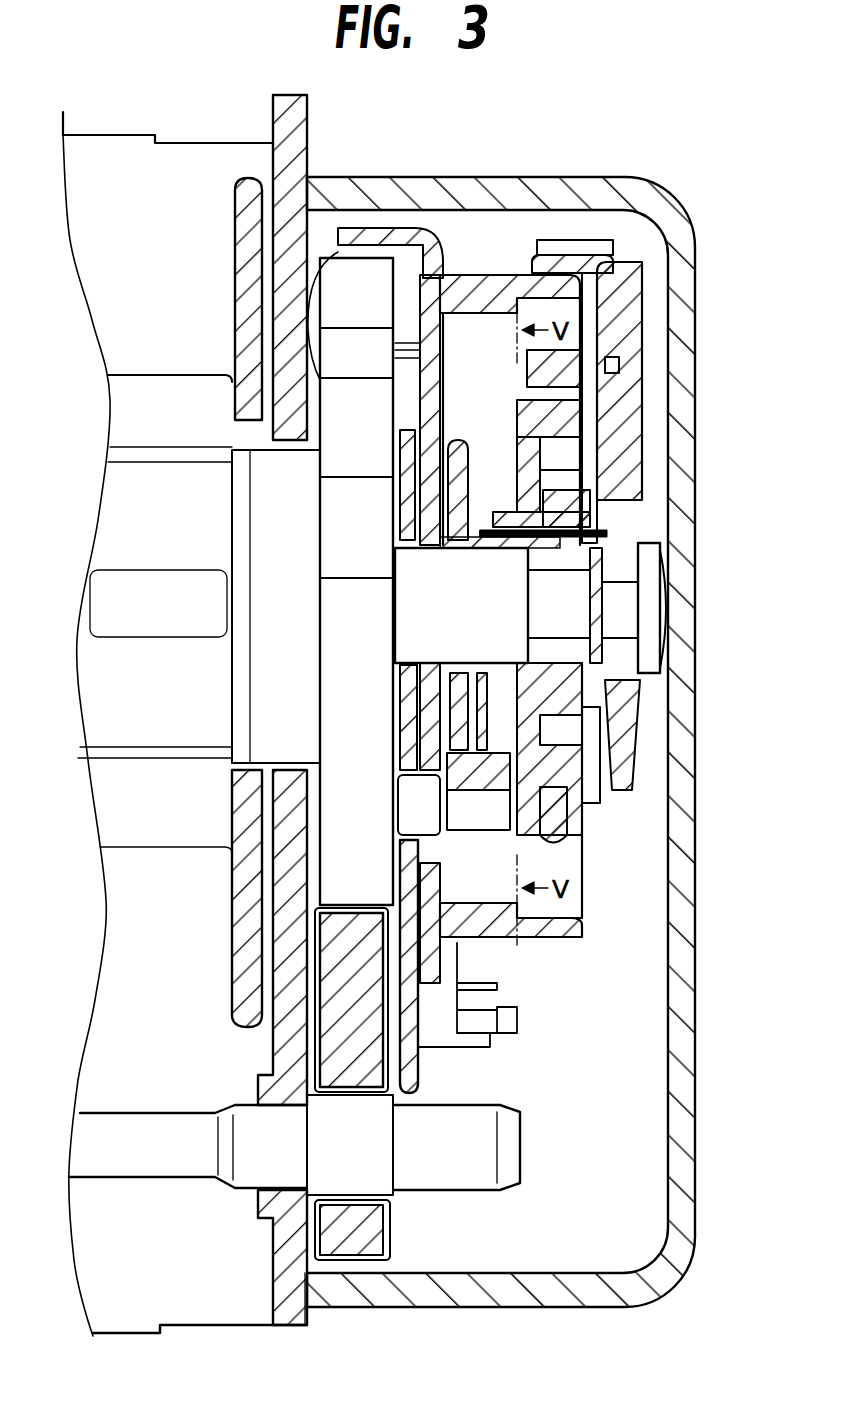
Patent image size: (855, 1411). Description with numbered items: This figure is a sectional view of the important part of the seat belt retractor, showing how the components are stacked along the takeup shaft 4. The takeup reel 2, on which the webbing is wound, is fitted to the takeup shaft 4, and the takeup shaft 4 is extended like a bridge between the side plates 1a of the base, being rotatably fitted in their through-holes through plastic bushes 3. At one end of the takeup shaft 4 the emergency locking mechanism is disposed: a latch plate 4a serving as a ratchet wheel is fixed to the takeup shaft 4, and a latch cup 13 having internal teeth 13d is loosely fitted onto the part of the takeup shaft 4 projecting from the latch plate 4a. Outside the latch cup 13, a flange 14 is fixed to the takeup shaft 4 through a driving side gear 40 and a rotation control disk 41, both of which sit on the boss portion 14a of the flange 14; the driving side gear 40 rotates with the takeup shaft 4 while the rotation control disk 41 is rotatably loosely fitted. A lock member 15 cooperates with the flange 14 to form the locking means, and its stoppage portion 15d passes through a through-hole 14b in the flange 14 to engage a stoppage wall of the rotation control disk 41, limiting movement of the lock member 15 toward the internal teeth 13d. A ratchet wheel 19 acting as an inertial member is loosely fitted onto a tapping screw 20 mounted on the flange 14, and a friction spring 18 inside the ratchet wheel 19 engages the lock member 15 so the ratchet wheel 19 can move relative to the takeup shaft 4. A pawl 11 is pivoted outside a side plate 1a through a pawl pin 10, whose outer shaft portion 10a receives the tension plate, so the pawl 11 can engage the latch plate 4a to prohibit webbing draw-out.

The side plate 1a is at (307, 132).
The takeup reel 2 is at (250, 185).
The plastic bush 3 is at (295, 775).
The takeup shaft 4 is at (365, 290).
The latch plate 4a is at (340, 546).
The pawl pin 10 is at (136, 1180).
The shaft portion 10a is at (480, 1190).
The pawl 11 is at (330, 912).
The latch cup 13 is at (545, 940).
The internal teeth 13d is at (560, 915).
The flange 14 is at (513, 430).
The boss portion 14a is at (455, 550).
The through-hole 14b is at (545, 480).
The lock member 15 is at (590, 512).
The stoppage portion 15d is at (490, 550).
The friction spring 18 is at (640, 392).
The ratchet wheel 19 is at (668, 310).
The tapping screw 20 is at (662, 608).
The driving side gear 40 is at (415, 430).
The rotation control disk 41 is at (462, 450).